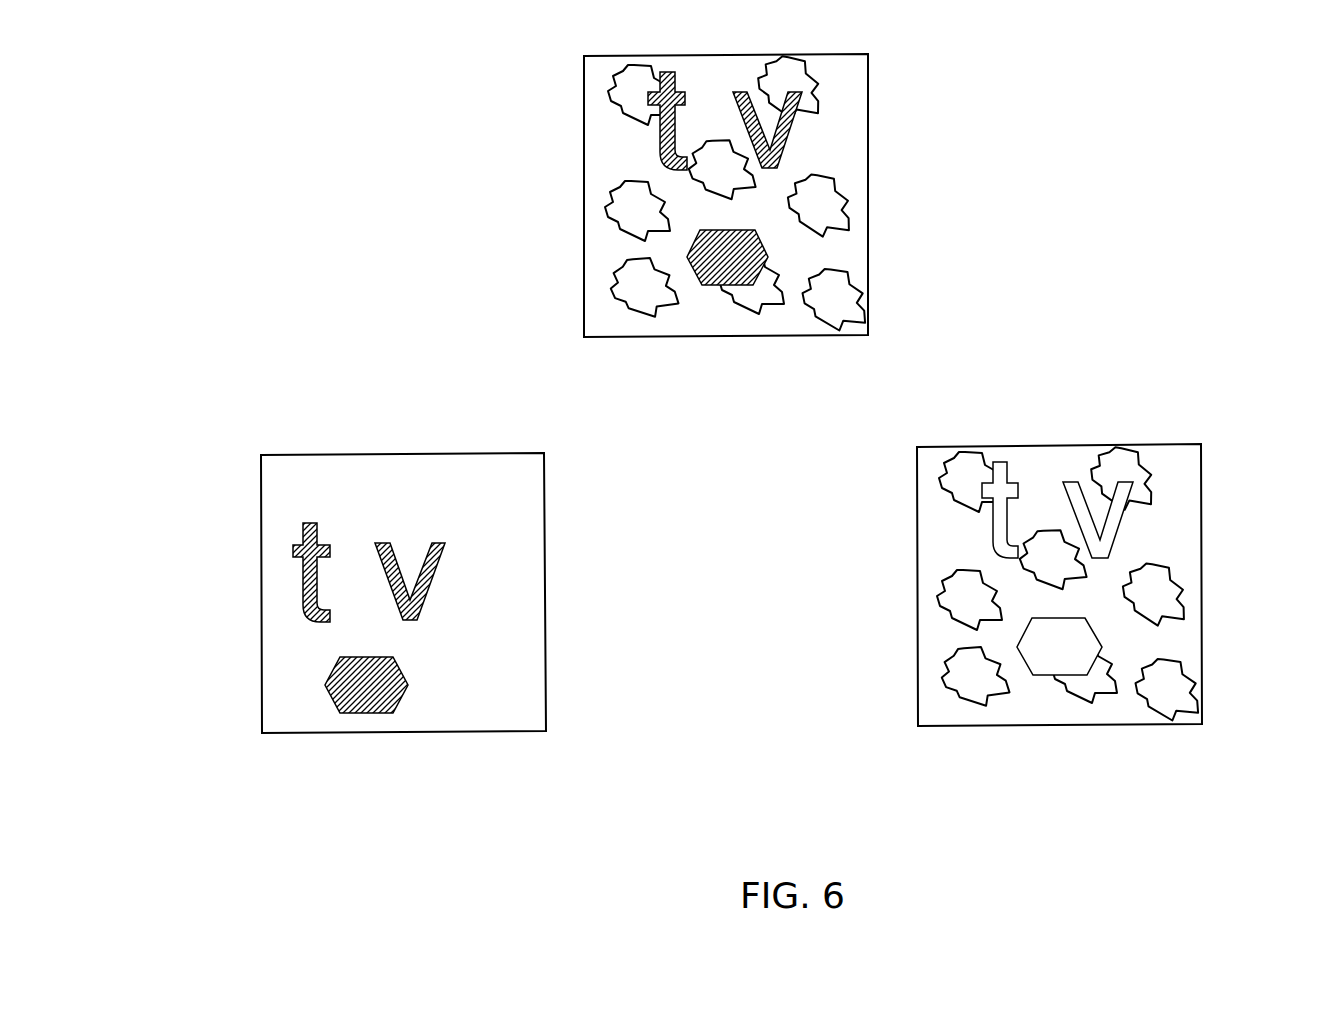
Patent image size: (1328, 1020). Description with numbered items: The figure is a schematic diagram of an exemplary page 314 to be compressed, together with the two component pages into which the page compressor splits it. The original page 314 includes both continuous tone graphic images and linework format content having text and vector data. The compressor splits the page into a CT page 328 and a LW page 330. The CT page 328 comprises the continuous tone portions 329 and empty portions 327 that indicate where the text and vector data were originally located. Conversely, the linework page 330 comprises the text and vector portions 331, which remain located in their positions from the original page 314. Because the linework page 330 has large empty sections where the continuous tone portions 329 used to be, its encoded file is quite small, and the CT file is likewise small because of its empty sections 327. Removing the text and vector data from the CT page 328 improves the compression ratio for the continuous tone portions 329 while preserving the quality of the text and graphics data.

The page 314 is at (868, 185).
The LW page 330 is at (260, 603).
The text and vector portions 331 is at (387, 580).
The CT page 328 is at (1202, 642).
The continuous tone portions 329 is at (1153, 572).
The empty portions 327 is at (1088, 530).